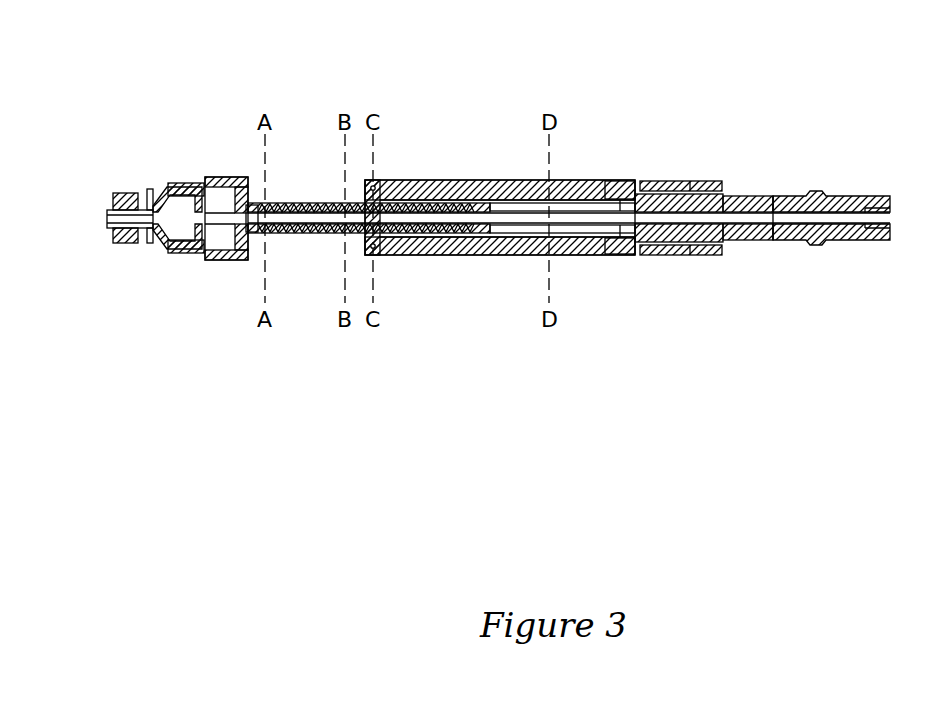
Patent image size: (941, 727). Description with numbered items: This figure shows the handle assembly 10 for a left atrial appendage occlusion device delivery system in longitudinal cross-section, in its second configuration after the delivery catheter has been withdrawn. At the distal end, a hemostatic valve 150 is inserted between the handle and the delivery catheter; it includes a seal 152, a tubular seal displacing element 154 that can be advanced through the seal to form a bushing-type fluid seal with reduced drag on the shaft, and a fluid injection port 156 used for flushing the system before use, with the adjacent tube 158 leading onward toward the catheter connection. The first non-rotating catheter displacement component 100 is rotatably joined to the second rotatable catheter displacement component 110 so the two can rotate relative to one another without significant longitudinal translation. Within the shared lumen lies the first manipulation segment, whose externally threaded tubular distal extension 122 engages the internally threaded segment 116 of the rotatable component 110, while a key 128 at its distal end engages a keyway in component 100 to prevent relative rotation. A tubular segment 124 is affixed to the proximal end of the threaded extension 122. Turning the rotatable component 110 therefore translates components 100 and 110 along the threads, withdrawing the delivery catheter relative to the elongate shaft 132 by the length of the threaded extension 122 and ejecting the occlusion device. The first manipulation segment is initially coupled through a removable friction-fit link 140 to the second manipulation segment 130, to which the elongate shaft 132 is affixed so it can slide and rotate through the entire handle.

The handle assembly 10 is at (363, 84).
The first non-rotating catheter displacement component 100 is at (331, 233).
The second rotatable catheter displacement component 110 is at (470, 180).
The internally threaded segment 116 is at (611, 181).
The externally threaded tubular distal extension 122 is at (450, 234).
The tubular segment 124 is at (540, 203).
The key 128 is at (330, 203).
The second manipulation segment 130 is at (846, 196).
The elongate shaft 132 is at (668, 243).
The removable link 140 is at (765, 196).
The hemostatic valve 150 is at (176, 186).
The seal 152 is at (191, 253).
The tubular seal displacing element 154 is at (245, 177).
The fluid injection port 156 is at (149, 189).
The inlet tube 158 is at (130, 244).